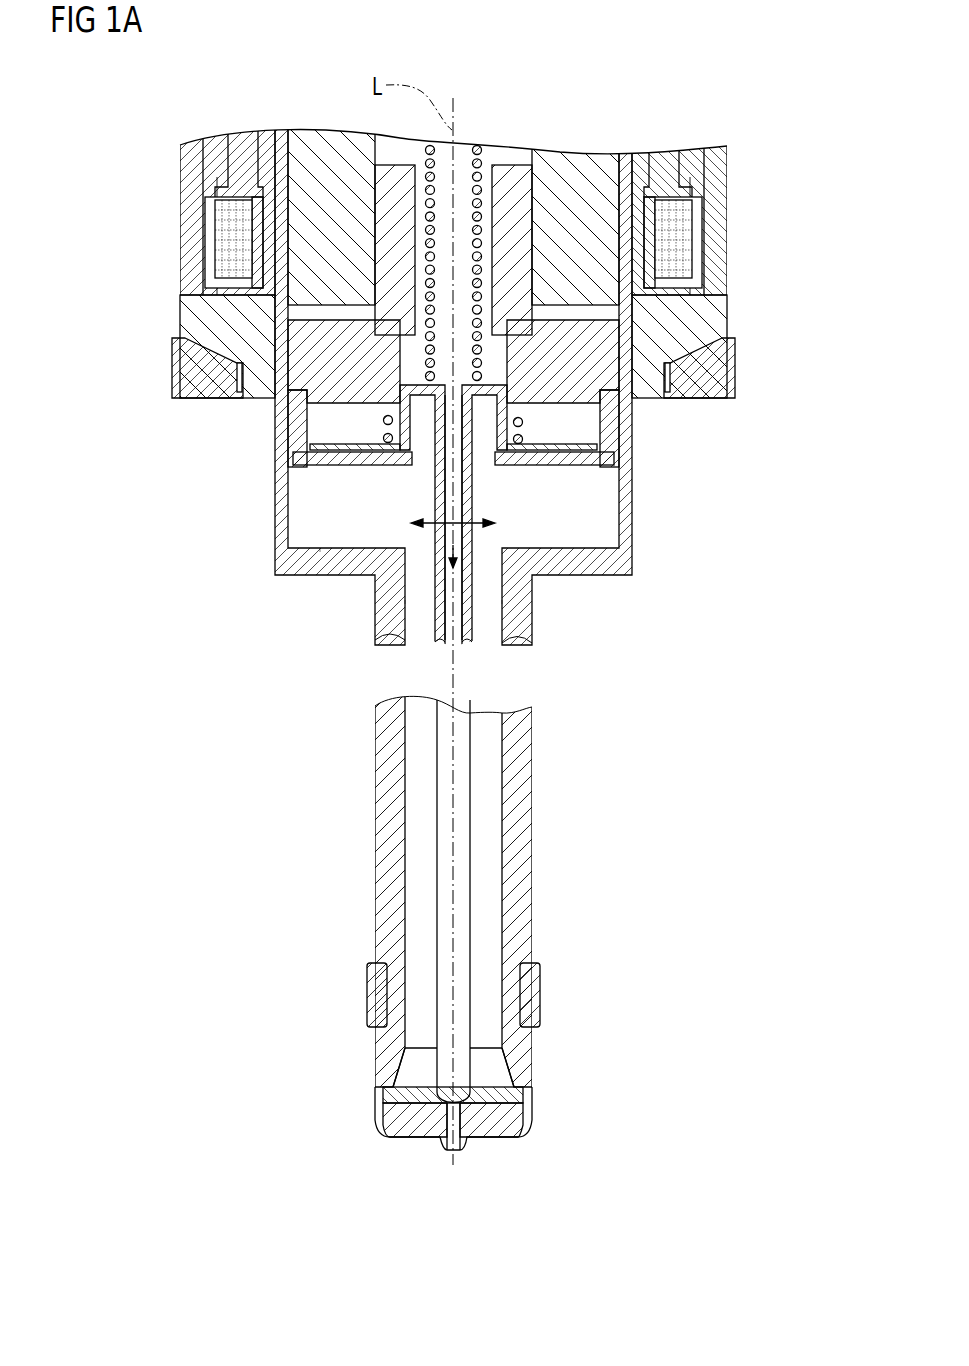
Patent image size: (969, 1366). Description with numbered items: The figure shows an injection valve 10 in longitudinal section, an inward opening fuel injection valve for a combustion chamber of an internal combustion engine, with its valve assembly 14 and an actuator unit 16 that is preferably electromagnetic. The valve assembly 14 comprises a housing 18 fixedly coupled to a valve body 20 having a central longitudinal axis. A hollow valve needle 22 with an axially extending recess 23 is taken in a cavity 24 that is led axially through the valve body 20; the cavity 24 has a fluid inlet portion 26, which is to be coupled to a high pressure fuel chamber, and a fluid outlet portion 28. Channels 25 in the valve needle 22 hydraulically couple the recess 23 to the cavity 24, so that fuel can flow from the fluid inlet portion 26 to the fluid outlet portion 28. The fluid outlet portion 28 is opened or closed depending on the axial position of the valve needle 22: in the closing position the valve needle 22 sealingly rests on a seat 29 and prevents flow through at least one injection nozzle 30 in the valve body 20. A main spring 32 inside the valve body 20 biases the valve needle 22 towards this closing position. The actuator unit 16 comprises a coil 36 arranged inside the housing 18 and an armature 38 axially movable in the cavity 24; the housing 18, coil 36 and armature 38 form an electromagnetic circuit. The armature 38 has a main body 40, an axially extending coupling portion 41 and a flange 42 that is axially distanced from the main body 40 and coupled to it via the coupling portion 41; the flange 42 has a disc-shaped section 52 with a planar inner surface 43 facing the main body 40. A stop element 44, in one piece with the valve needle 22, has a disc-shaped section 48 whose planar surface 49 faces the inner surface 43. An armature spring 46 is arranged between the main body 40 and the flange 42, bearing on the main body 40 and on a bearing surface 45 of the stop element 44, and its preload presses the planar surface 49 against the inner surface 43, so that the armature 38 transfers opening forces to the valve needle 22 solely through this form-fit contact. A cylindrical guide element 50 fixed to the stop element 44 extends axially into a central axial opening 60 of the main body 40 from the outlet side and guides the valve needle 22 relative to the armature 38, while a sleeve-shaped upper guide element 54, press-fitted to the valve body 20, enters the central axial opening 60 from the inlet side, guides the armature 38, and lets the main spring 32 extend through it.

The injection valve 10 is at (707, 85).
The valve assembly 14 is at (154, 413).
The actuator unit 16 is at (153, 262).
The housing 18 is at (195, 173).
The valve body 20 is at (322, 232).
The valve needle 22 is at (445, 627).
The recess 23 is at (457, 597).
The cavity 24 is at (578, 523).
The channels 25 is at (405, 500).
The fluid inlet portion 26 is at (459, 106).
The fluid outlet portion 28 is at (481, 1083).
The seat 29 is at (500, 1127).
The injection nozzle 30 is at (436, 1136).
The main spring 32 is at (487, 190).
The coil 36 is at (680, 224).
The armature 38 is at (640, 353).
The main body 40 is at (243, 368).
The coupling portion 41 is at (275, 405).
The flange 42 is at (307, 455).
The inner surface 43 is at (570, 447).
The stop element 44 is at (375, 452).
The bearing surface 45 is at (530, 443).
The armature spring 46 is at (388, 420).
The disc-shaped section 48 is at (575, 422).
The planar surface 49 is at (373, 453).
The cylindrical guide element 50 is at (505, 416).
The disc-shaped section 52 is at (555, 455).
The upper guide element 54 is at (512, 223).
The central axial opening 60 is at (415, 357).